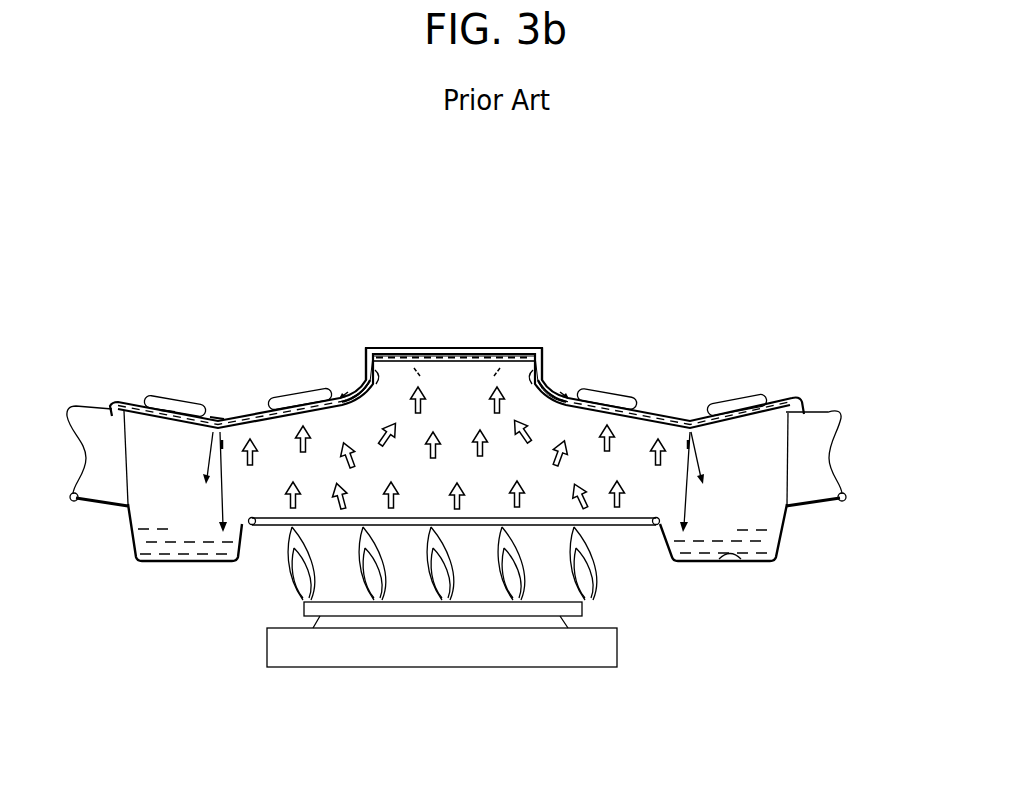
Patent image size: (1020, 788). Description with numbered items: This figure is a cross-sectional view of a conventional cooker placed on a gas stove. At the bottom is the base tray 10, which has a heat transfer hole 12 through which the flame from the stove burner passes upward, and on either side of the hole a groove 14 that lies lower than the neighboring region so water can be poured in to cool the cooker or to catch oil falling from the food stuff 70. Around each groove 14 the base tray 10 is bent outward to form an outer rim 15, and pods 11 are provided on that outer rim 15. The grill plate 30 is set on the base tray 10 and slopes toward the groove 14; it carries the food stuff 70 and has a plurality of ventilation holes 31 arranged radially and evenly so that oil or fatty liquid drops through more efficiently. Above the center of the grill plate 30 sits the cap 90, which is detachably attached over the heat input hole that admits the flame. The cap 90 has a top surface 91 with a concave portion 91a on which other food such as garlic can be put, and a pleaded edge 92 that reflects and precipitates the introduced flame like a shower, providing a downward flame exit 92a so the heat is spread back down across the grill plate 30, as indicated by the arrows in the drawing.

The base tray 10 is at (708, 582).
The pods 11 is at (812, 448).
The heat transfer hole 12 is at (633, 527).
The groove 14 is at (748, 562).
The outer rim 15 is at (813, 505).
The grill plate 30 is at (225, 412).
The ventilation holes 31 is at (217, 424).
The food stuff 70 is at (592, 394).
The cap 90 is at (552, 340).
The top surface 91 is at (430, 350).
The concave portion 91a is at (462, 352).
The pleaded edge 92 is at (552, 354).
The downward flame exit 92a is at (566, 362).